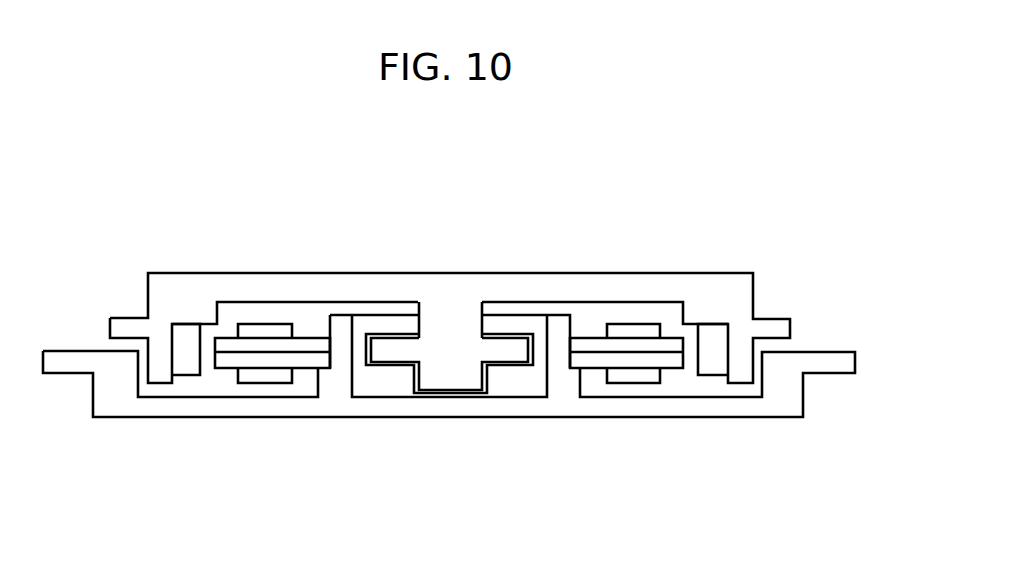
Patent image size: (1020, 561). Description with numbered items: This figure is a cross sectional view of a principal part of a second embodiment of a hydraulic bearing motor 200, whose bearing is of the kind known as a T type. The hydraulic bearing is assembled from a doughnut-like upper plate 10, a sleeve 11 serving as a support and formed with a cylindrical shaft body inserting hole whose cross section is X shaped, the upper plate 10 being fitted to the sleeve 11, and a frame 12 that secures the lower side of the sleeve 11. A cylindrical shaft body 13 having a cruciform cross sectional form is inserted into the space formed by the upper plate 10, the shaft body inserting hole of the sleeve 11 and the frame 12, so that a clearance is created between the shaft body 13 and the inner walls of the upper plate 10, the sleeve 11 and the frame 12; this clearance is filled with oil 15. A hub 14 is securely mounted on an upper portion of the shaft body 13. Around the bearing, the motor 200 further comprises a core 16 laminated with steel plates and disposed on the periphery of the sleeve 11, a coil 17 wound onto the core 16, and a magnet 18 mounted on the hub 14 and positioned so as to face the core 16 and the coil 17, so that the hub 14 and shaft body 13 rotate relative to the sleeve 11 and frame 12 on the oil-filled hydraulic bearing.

The hydraulic bearing motor 200 is at (655, 205).
The frame 12 is at (525, 410).
The hub 14 is at (328, 279).
The shaft body 13 is at (443, 279).
The oil 15 is at (374, 331).
The upper plate 10 is at (502, 320).
The sleeve 11 is at (538, 340).
The core 16 is at (582, 342).
The coil 17 is at (636, 328).
The magnet 18 is at (716, 325).